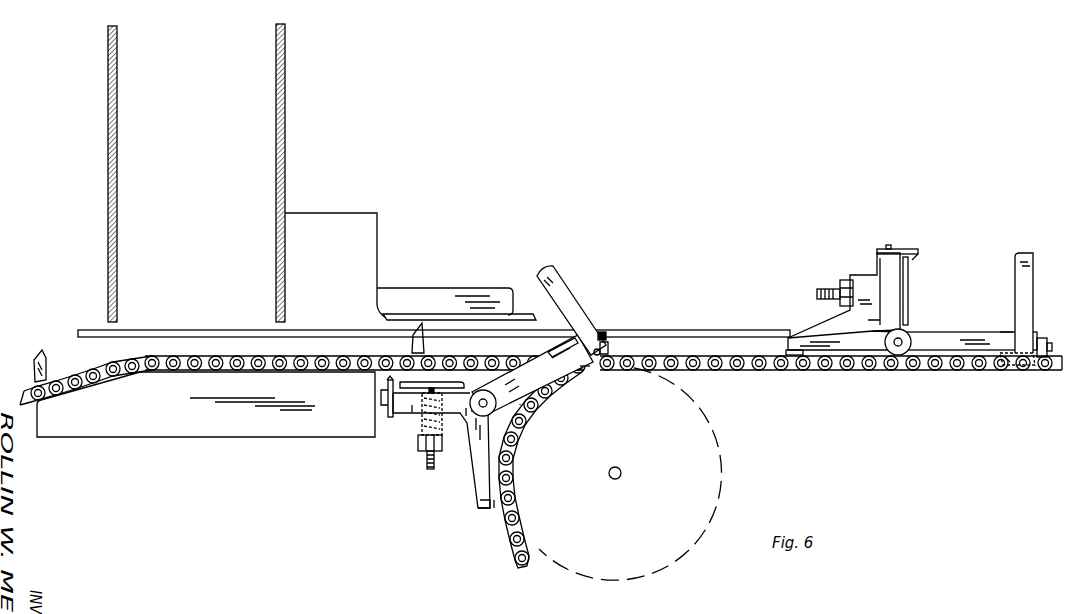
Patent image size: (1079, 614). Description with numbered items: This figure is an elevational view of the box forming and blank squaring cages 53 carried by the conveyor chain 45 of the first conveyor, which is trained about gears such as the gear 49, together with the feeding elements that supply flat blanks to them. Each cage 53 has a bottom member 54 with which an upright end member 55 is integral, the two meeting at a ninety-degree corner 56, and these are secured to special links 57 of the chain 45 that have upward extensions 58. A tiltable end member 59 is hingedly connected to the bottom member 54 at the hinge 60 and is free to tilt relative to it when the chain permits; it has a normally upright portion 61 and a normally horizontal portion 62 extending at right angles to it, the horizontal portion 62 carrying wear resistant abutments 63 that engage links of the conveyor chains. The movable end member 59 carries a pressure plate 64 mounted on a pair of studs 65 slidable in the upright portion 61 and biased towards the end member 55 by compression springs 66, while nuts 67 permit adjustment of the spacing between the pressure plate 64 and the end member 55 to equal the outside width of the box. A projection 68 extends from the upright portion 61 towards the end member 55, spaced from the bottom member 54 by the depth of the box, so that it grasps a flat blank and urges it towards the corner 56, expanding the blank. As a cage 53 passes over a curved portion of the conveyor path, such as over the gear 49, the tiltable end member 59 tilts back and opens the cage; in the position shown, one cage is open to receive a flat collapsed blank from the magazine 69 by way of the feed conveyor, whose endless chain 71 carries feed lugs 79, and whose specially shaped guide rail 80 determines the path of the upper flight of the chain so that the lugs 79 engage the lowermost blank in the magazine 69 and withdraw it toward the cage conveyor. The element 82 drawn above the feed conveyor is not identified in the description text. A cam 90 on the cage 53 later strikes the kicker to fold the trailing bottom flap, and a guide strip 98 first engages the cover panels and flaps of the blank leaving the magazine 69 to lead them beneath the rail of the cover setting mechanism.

The conveyor chain 45 is at (513, 558).
The gear 49 is at (716, 452).
The box forming and blank squaring cage 53 is at (520, 404).
The bottom member 54 is at (754, 373).
The upright end member 55 is at (562, 285).
The corner 56 is at (570, 342).
The special link 57 is at (581, 372).
The upward extension 58 is at (1008, 347).
The tiltable end member 59 is at (466, 455).
The hinge 60 is at (487, 402).
The upright portion 61 is at (412, 405).
The horizontal portion 62 is at (482, 490).
The wear resistant abutment 63 is at (495, 506).
The pressure plate 64 is at (462, 384).
The stud 65 is at (429, 470).
The compression spring 66 is at (418, 438).
The nut 67 is at (418, 446).
The projection 68 is at (384, 394).
The magazine 69 is at (286, 129).
The feed conveyor chain 71 is at (248, 370).
The feed lug 79 is at (47, 358).
The guide rail 80 is at (170, 413).
The hopper 82 is at (466, 292).
The cam 90 is at (606, 352).
The guide strip 98 is at (410, 315).